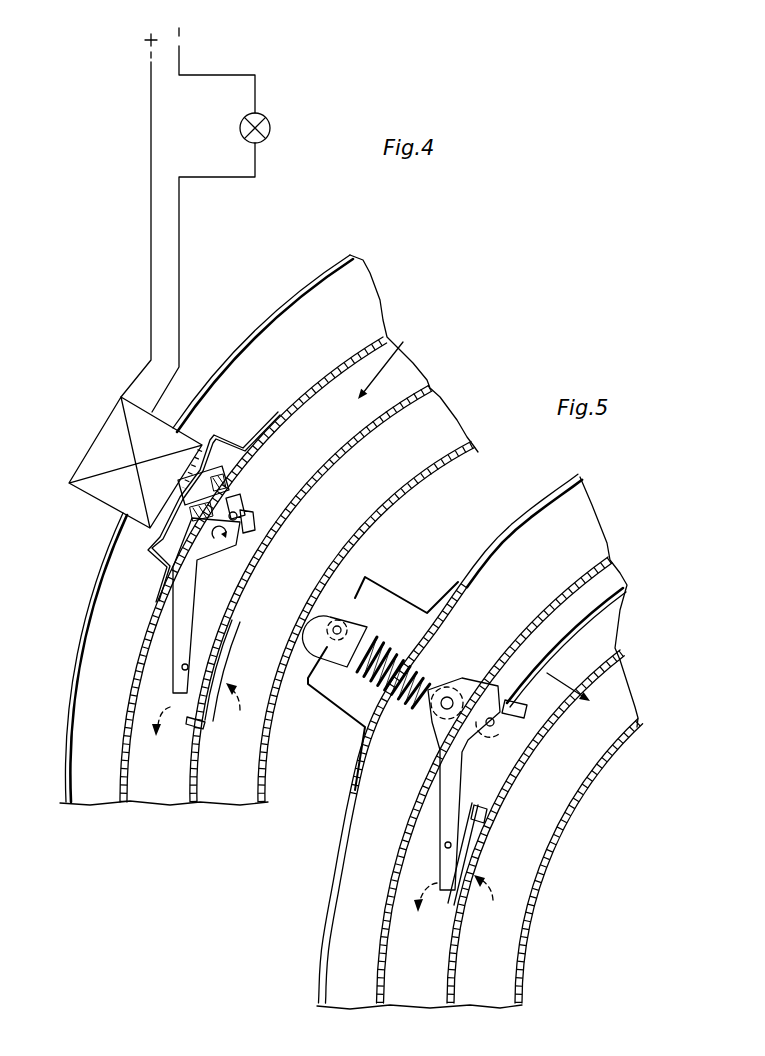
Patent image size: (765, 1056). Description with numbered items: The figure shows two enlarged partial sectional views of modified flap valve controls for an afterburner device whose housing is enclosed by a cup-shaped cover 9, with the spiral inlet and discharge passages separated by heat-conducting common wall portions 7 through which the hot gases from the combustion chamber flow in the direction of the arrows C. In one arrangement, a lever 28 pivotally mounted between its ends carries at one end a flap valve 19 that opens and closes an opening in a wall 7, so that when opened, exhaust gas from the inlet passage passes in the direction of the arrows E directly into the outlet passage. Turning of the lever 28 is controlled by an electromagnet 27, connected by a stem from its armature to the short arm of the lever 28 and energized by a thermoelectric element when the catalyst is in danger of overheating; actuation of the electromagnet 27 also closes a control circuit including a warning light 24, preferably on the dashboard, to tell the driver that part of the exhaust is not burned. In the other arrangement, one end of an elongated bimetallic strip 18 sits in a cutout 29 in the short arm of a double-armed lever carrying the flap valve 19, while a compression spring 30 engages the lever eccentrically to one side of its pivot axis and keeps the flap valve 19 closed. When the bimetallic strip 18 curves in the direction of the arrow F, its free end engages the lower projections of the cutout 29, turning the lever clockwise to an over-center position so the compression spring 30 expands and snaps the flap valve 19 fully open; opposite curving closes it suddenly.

In FIG. 4, the warning light 24 is at (270, 120).
In FIG. 4, the electromagnet 27 is at (108, 441).
In FIG. 4, the cup-shaped cover 9 is at (66, 745).
In FIG. 5, the cup-shaped cover 9 is at (322, 975).
In FIG. 4, the common wall portions 7 is at (190, 785).
In FIG. 5, the common wall portions 7 is at (450, 942).
In FIG. 4, the lever 28 is at (197, 612).
In FIG. 4, the flap valve 19 is at (190, 703).
In FIG. 5, the flap valve 19 is at (455, 885).
In FIG. 4, the direction of hot gases leaving the combustion chamber C is at (386, 361).
In FIG. 4, the direction of bypassing exhaust gas E is at (240, 711).
In FIG. 5, the direction of bypassing exhaust gas E is at (493, 900).
In FIG. 5, the elongated bimetallic strip 18 is at (537, 660).
In FIG. 5, the compression spring 30 is at (378, 630).
In FIG. 5, the cutout 29 is at (490, 682).
In FIG. 5, the direction of bimetallic strip curving F is at (547, 673).